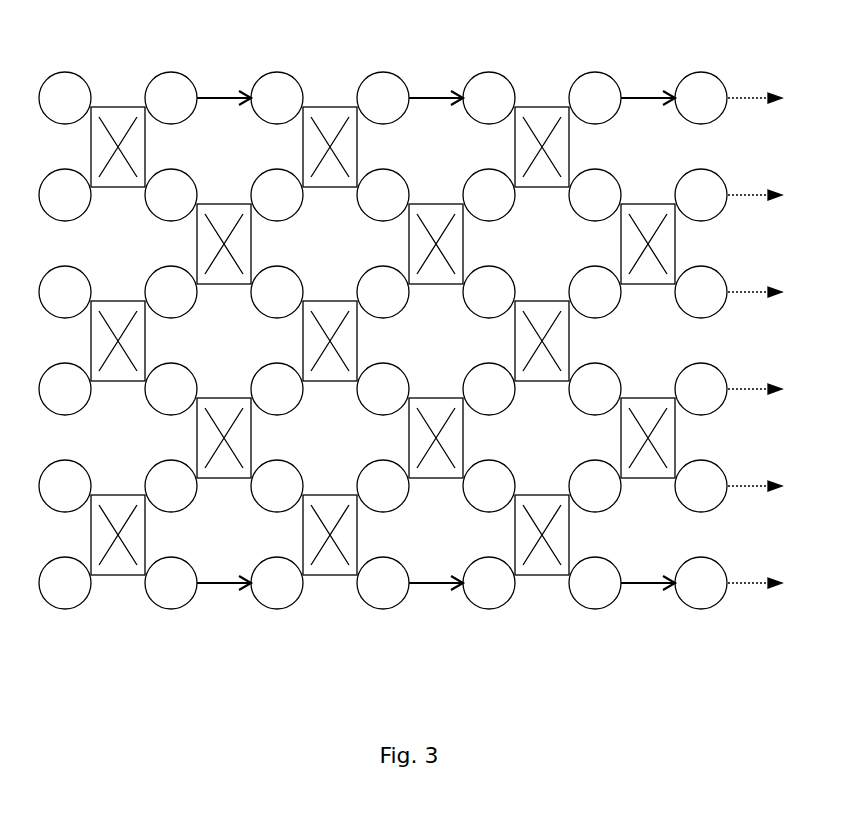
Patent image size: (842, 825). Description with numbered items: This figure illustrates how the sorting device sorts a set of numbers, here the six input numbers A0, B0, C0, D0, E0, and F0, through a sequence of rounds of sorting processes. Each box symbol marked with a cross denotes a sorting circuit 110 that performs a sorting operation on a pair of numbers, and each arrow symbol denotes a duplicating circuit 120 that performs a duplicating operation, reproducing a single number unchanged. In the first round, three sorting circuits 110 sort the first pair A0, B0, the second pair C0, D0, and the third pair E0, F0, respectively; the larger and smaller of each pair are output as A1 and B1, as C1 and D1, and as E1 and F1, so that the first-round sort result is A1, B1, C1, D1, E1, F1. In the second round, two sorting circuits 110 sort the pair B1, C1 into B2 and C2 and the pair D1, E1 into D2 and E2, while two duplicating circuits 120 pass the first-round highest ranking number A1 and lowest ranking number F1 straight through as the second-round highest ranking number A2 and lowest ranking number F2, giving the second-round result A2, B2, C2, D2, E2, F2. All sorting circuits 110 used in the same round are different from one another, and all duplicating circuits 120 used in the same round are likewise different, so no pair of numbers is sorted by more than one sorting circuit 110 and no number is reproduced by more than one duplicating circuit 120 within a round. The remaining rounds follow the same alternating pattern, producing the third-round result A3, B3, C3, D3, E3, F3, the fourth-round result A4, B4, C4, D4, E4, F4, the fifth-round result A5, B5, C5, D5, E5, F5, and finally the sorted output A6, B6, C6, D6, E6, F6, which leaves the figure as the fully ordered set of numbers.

The sorting circuit 110 is at (383, 309).
The duplicating circuit 120 is at (436, 344).
The input number A0 is at (65, 98).
The first-round highest ranking number A1 is at (171, 98).
The second-round highest ranking number A2 is at (277, 98).
The third-round highest ranking number A3 is at (383, 98).
The fourth-round highest ranking number A4 is at (489, 98).
The fifth-round highest ranking number A5 is at (595, 98).
The sixth-round highest ranking number A6 is at (701, 98).
The input number B0 is at (65, 195).
The first-round sort result number B1 is at (171, 195).
The second-round sort result number B2 is at (277, 195).
The third-round sort result number B3 is at (383, 195).
The fourth-round sort result number B4 is at (489, 195).
The fifth-round sort result number B5 is at (595, 195).
The sixth-round sort result number B6 is at (701, 195).
The input number C0 is at (65, 292).
The first-round sort result number C1 is at (171, 292).
The second-round sort result number C2 is at (277, 292).
The third-round sort result number C3 is at (383, 292).
The fourth-round sort result number C4 is at (489, 292).
The fifth-round sort result number C5 is at (595, 292).
The sixth-round sort result number C6 is at (701, 292).
The input number D0 is at (65, 389).
The first-round sort result number D1 is at (171, 389).
The second-round sort result number D2 is at (277, 389).
The third-round sort result number D3 is at (383, 389).
The fourth-round sort result number D4 is at (489, 389).
The fifth-round sort result number D5 is at (595, 389).
The sixth-round sort result number D6 is at (701, 389).
The input number E0 is at (65, 486).
The first-round sort result number E1 is at (171, 486).
The second-round sort result number E2 is at (277, 486).
The third-round sort result number E3 is at (383, 486).
The fourth-round sort result number E4 is at (489, 486).
The fifth-round sort result number E5 is at (595, 486).
The sixth-round sort result number E6 is at (701, 486).
The input number F0 is at (65, 583).
The first-round lowest ranking number F1 is at (171, 583).
The second-round lowest ranking number F2 is at (277, 583).
The third-round lowest ranking number F3 is at (383, 583).
The fourth-round lowest ranking number F4 is at (489, 583).
The fifth-round lowest ranking number F5 is at (595, 583).
The sixth-round lowest ranking number F6 is at (701, 583).